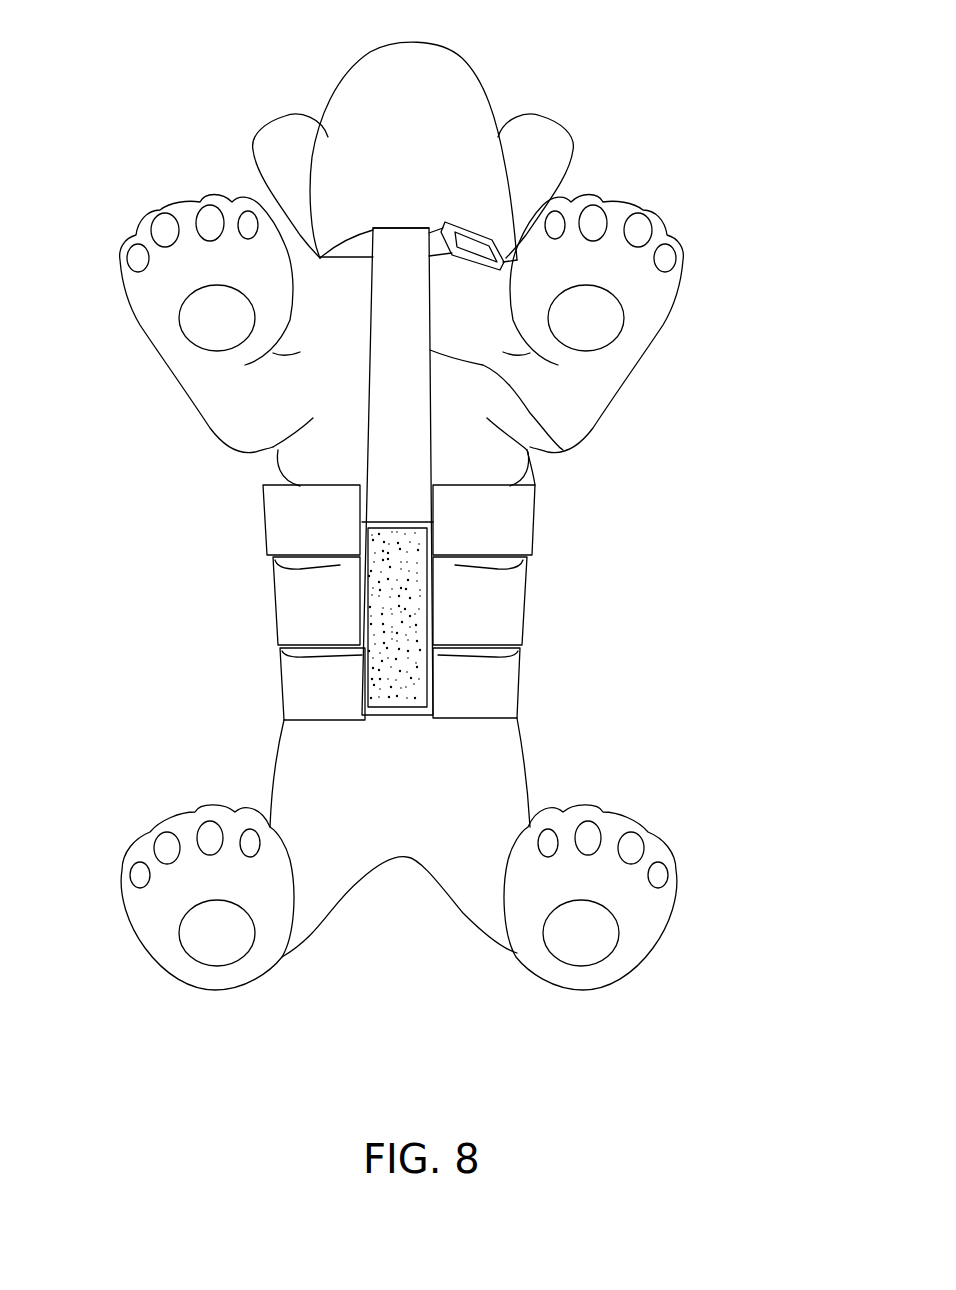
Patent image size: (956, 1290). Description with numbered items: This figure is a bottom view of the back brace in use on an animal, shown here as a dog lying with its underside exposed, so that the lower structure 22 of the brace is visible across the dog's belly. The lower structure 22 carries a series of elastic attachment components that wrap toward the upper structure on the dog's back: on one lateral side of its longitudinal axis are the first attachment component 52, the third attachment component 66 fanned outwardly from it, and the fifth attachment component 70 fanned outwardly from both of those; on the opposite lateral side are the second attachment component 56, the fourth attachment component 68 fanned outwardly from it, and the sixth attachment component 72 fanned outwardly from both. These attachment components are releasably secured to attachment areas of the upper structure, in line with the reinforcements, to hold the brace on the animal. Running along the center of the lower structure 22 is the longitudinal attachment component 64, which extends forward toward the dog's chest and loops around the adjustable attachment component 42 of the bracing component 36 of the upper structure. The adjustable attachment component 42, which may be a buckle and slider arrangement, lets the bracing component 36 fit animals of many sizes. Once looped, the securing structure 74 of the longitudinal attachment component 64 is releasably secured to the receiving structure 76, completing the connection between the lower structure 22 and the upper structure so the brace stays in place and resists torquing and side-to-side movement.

The lower structure 22 is at (435, 497).
The bracing component 36 is at (403, 213).
The adjustable attachment component 42 is at (455, 207).
The securing structure 74 is at (459, 380).
The longitudinal attachment component 64 is at (563, 450).
The second attachment component 56 is at (265, 520).
The first attachment component 52 is at (535, 518).
The fourth attachment component 68 is at (275, 605).
The third attachment component 66 is at (525, 607).
The sixth attachment component 72 is at (282, 682).
The fifth attachment component 70 is at (520, 687).
The receiving structure 76 is at (397, 675).